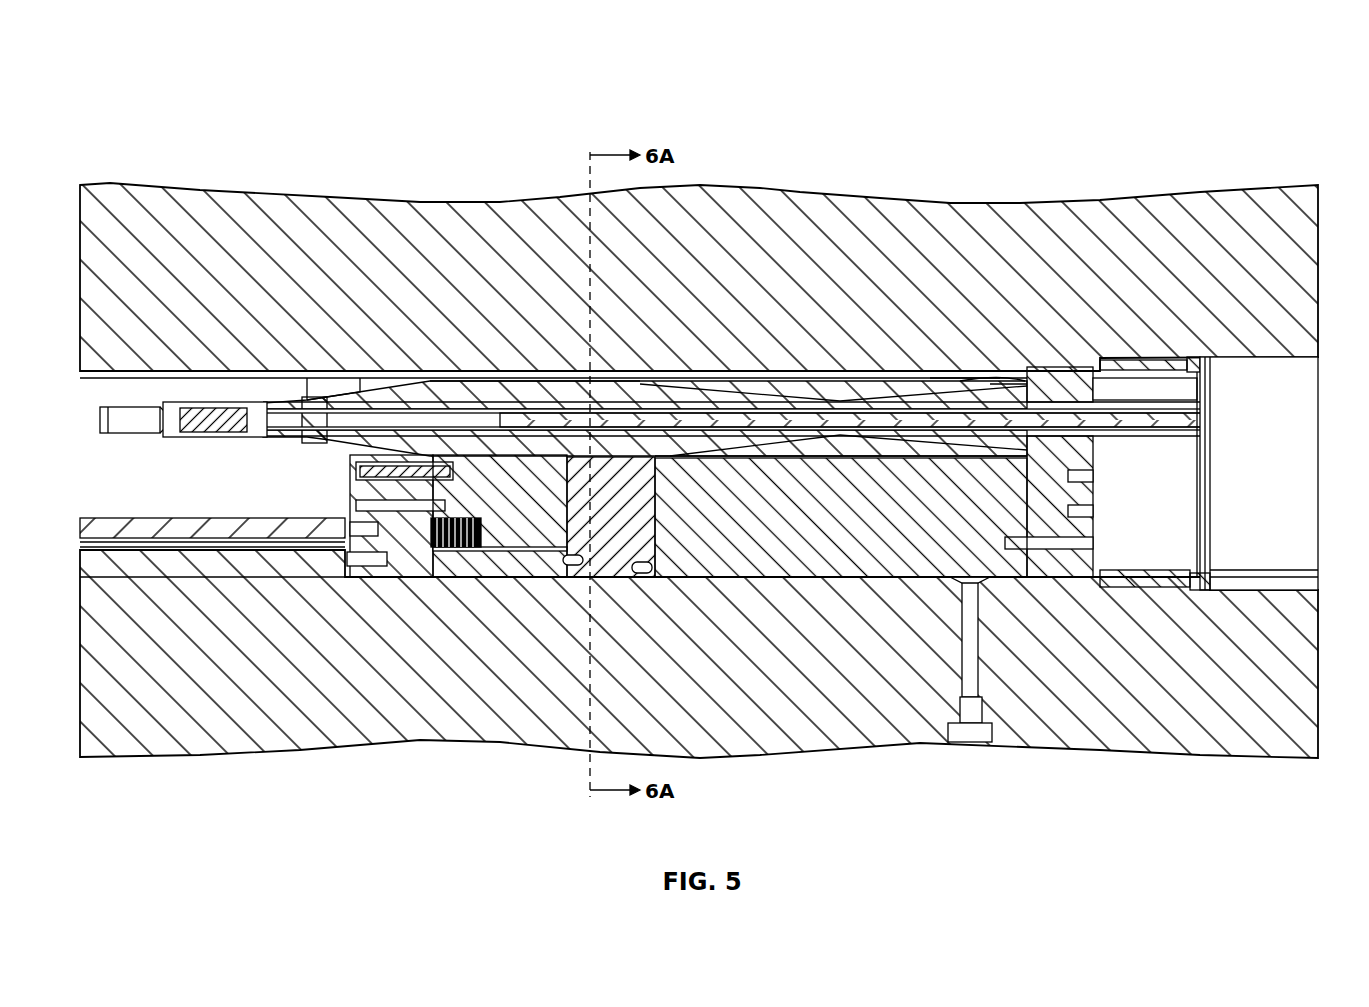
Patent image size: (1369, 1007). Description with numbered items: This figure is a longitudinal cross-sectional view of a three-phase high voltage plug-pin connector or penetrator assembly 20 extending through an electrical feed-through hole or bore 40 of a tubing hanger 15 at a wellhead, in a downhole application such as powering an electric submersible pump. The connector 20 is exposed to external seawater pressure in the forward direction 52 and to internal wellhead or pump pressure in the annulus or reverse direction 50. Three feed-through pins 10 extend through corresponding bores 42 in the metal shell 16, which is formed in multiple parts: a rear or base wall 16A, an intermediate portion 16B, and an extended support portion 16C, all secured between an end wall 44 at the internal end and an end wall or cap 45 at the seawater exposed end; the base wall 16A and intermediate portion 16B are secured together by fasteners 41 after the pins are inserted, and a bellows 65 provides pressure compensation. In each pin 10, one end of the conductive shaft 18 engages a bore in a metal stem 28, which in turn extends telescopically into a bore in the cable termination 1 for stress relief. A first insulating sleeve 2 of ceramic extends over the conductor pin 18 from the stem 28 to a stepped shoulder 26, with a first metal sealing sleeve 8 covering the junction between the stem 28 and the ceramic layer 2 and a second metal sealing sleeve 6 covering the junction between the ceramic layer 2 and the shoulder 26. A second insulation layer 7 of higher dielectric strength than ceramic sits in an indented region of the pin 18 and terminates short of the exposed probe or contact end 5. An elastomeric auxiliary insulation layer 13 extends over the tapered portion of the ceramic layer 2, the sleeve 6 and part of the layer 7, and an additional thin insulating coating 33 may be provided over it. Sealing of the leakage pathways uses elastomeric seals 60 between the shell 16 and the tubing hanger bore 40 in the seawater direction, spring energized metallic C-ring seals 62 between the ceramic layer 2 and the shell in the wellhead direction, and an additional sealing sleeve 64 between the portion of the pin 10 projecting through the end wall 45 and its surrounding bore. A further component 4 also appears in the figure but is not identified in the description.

The cable termination 1 is at (125, 425).
The first insulating sleeve 2 is at (485, 400).
The nut 4 is at (345, 487).
The contact end 5 is at (1285, 420).
The second metal sealing sleeve 6 is at (913, 368).
The second insulation layer 7 is at (1195, 430).
The first metal sealing sleeve 8 is at (312, 400).
The feed-through pin 10 is at (785, 400).
The auxiliary insulation layer 13 is at (1040, 378).
The tubing hanger 15 is at (1190, 720).
The metal shell 16 is at (440, 385).
The base wall 16A is at (530, 535).
The intermediate portion 16B is at (600, 565).
The extended support portion 16C is at (725, 560).
The conductive shaft 18 is at (690, 380).
The connector assembly 20 is at (1005, 378).
The stepped shoulder 26 is at (948, 380).
The metal stem 28 is at (213, 408).
The thin insulating coating 33 is at (790, 458).
The feed-through bore 40 is at (805, 560).
The fasteners 41 is at (1095, 540).
The pin through bore 42 is at (540, 384).
The end wall 44 is at (380, 545).
The end wall 45 is at (1090, 505).
The reverse direction 50 is at (250, 488).
The forward direction 52 is at (1300, 520).
The elastomeric seals 60 is at (1090, 370).
The metallic C-ring seals 62 is at (722, 380).
The sealing sleeve 64 is at (1097, 455).
The bellows 65 is at (440, 555).